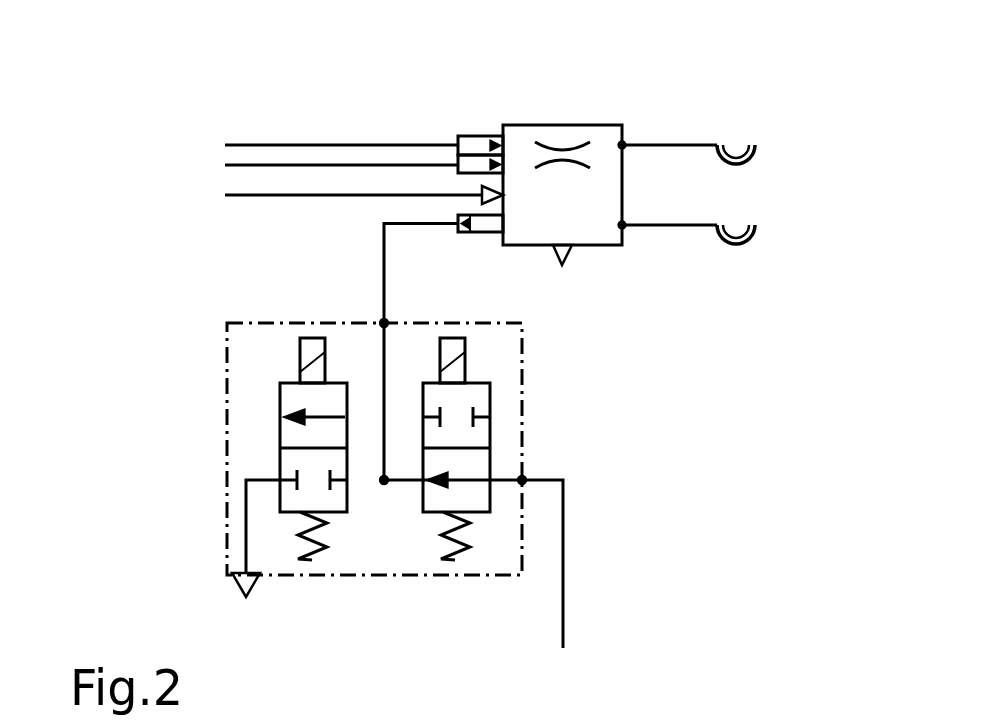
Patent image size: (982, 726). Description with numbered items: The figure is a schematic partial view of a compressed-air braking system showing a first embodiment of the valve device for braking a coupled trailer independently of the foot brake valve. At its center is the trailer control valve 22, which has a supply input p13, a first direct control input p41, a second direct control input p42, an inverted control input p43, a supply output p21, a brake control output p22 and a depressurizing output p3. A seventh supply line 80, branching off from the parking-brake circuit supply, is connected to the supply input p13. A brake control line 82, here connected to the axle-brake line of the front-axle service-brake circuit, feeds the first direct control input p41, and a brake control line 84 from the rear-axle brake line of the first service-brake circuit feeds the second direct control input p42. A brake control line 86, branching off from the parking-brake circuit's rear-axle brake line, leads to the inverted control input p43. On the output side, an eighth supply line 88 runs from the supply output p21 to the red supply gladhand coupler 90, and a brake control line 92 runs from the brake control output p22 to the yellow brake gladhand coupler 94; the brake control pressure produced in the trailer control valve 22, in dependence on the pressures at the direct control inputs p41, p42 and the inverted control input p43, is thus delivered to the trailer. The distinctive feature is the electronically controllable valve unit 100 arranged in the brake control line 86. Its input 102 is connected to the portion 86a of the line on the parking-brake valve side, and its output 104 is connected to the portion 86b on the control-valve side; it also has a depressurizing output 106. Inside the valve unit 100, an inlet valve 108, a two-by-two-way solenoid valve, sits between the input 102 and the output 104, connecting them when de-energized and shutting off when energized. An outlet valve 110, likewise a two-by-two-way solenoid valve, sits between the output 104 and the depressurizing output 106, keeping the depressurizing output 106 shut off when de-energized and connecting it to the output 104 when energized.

The trailer control valve 22 is at (562, 185).
The seventh supply line 80 is at (350, 193).
The brake control line 82 is at (262, 140).
The brake control line 84 is at (305, 162).
The brake control line 86 is at (466, 436).
The portion of the brake control line on the parking-brake valve side 86a is at (565, 567).
The portion of the brake control line on the control-valve side 86b is at (380, 250).
The eighth supply line 88 is at (697, 143).
The supply gladhand coupler 90 is at (758, 152).
The brake control line 92 is at (675, 223).
The brake gladhand coupler 94 is at (758, 232).
The electronically controllable valve unit 100 is at (227, 485).
The input 102 is at (525, 478).
The output 104 is at (382, 320).
The depressurizing output 106 is at (235, 580).
The inlet valve 108 is at (492, 402).
The outlet valve 110 is at (280, 402).
The depressurizing output p3 is at (568, 255).
The supply input p13 is at (478, 186).
The supply output p21 is at (624, 143).
The brake control output p22 is at (623, 229).
The first direct control input p41 is at (468, 137).
The second direct control input p42 is at (478, 152).
The inverted control input p43 is at (487, 238).